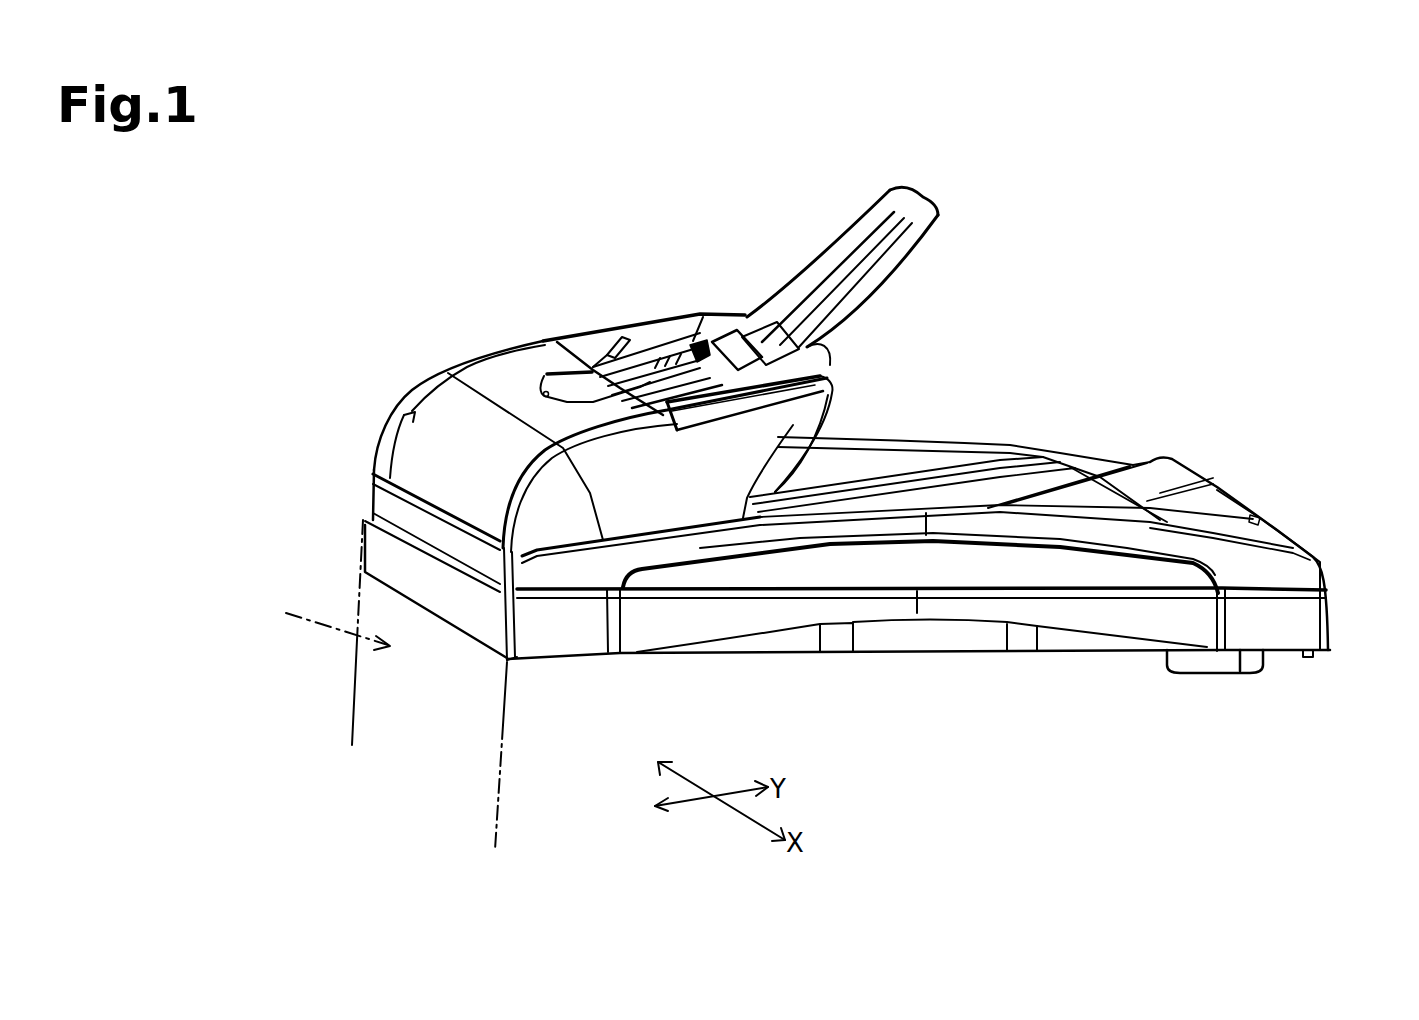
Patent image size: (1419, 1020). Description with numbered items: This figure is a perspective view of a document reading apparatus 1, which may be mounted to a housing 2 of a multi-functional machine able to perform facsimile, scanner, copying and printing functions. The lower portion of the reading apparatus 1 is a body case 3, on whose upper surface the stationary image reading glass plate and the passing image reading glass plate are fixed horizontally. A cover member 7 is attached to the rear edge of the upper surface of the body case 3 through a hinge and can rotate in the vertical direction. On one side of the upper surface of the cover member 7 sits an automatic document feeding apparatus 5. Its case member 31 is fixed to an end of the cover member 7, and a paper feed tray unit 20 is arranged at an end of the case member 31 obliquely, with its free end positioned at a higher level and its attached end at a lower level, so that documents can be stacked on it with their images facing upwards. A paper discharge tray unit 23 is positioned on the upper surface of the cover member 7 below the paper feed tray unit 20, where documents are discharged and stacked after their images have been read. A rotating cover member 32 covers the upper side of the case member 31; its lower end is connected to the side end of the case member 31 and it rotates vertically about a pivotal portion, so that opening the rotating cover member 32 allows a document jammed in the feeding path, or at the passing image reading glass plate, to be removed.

The reading apparatus 1 is at (1129, 334).
The housing 2 is at (328, 626).
The body case 3 is at (388, 553).
The automatic document feeding apparatus 5 is at (605, 304).
The cover member 7 is at (1298, 564).
The paper feed tray unit 20 is at (700, 338).
The paper discharge tray unit 23 is at (977, 485).
The case member 31 is at (633, 503).
The rotating cover member 32 is at (505, 378).